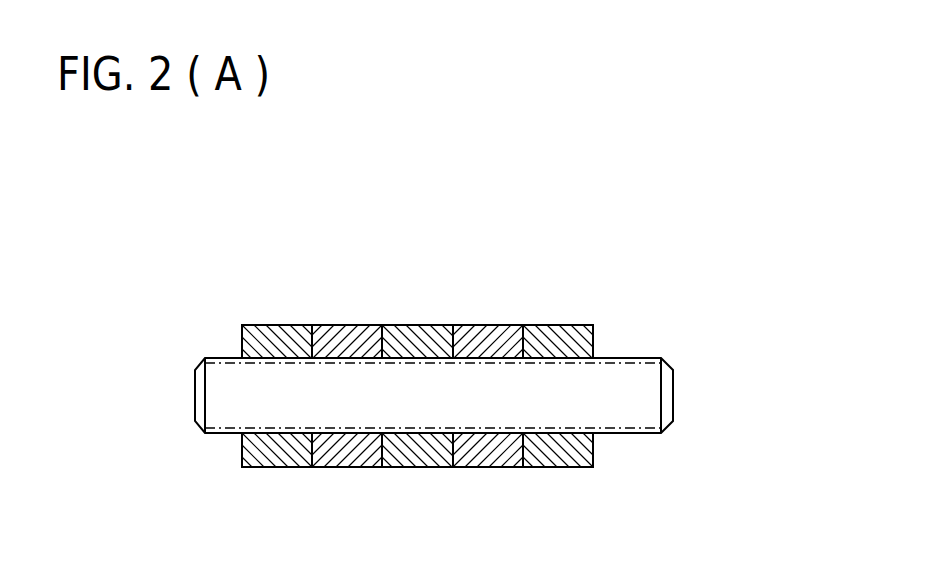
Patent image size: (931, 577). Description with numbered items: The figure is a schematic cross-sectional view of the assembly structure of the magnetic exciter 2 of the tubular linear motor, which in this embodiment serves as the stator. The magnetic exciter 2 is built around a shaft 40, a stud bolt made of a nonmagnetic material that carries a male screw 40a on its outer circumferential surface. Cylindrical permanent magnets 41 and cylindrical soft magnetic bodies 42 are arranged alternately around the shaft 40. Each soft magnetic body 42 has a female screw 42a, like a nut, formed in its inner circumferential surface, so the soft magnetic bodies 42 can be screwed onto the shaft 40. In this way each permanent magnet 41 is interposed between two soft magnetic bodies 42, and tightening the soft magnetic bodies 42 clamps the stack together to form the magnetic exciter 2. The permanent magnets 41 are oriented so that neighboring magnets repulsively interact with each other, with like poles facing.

The magnetic exciter 2 is at (456, 345).
The shaft 40 is at (637, 378).
The male screw 40a is at (613, 357).
The permanent magnet 41 is at (348, 453).
The soft magnetic body 42 is at (277, 333).
The female screw 42a is at (280, 367).